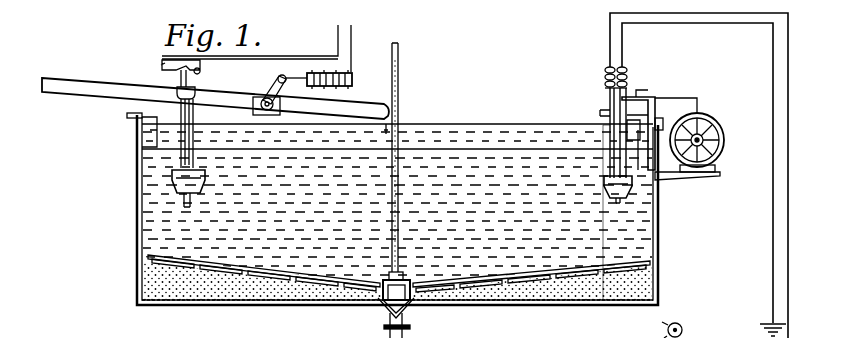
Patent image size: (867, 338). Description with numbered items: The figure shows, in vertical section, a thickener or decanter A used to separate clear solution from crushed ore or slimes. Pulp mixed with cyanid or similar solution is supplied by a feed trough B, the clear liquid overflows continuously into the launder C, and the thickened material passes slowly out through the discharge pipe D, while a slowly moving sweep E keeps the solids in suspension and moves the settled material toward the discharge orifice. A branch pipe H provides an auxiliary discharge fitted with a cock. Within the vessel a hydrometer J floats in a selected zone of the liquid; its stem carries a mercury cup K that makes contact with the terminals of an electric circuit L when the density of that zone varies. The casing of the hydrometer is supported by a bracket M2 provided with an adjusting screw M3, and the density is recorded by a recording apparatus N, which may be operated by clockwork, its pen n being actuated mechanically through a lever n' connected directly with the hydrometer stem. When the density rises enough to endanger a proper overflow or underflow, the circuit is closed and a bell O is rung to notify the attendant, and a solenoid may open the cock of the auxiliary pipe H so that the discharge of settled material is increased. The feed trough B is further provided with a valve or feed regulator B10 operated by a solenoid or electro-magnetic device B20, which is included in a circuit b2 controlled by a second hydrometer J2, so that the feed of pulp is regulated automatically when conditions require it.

The thickener A is at (425, 157).
The feed trough B is at (105, 86).
The feed regulator B10 is at (262, 94).
The solenoid B20 is at (347, 85).
The circuit b2 is at (338, 40).
The overflow launder C is at (137, 141).
The discharge pipe D is at (387, 325).
The sweep E is at (165, 258).
The branch pipe H is at (417, 305).
The hydrometer J is at (630, 188).
The hydrometer J2 is at (170, 188).
The mercury cup K is at (608, 95).
The electric circuit L is at (775, 207).
The bracket M2 is at (650, 110).
The adjusting screw M3 is at (600, 110).
The recording apparatus N is at (710, 140).
The pen n is at (694, 105).
The lever n' is at (647, 80).
The bell O is at (688, 328).